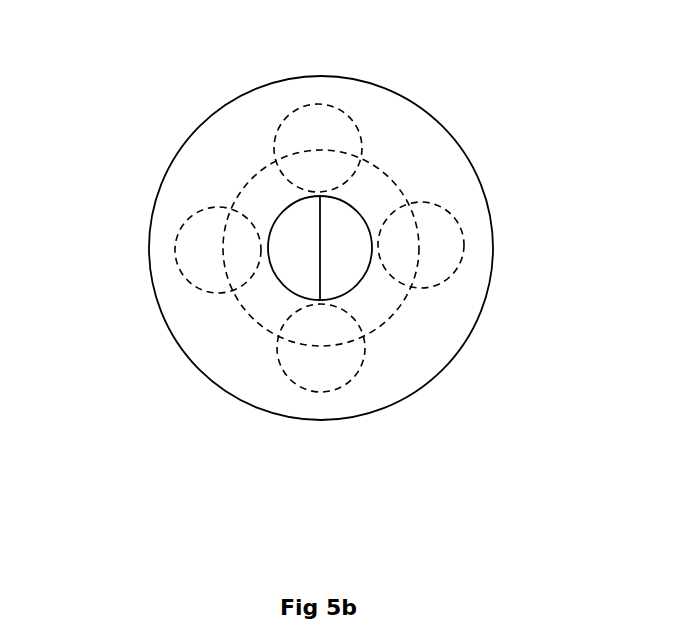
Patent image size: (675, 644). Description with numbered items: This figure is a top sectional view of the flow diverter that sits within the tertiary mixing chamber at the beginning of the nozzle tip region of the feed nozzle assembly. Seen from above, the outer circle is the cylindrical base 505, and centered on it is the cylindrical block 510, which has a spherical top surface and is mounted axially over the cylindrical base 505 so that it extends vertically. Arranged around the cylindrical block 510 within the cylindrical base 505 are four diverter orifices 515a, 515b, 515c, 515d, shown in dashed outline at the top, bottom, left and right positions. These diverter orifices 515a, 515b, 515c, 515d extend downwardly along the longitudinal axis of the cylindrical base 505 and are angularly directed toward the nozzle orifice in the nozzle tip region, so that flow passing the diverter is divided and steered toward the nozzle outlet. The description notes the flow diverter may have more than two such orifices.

The cylindrical base 505 is at (197, 367).
The cylindrical block 510 is at (357, 210).
The diverter orifice 515a is at (222, 252).
The diverter orifice 515b is at (418, 279).
The diverter orifice 515c is at (283, 123).
The diverter orifice 515d is at (337, 385).